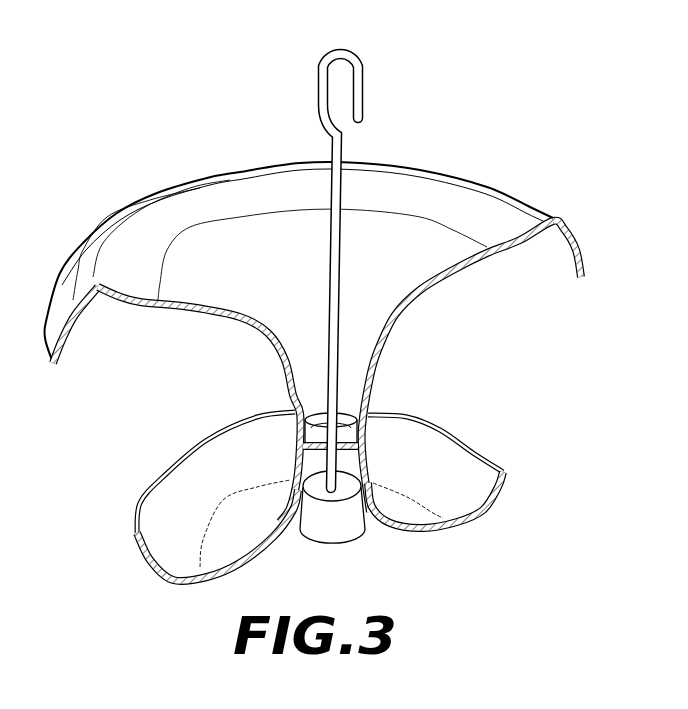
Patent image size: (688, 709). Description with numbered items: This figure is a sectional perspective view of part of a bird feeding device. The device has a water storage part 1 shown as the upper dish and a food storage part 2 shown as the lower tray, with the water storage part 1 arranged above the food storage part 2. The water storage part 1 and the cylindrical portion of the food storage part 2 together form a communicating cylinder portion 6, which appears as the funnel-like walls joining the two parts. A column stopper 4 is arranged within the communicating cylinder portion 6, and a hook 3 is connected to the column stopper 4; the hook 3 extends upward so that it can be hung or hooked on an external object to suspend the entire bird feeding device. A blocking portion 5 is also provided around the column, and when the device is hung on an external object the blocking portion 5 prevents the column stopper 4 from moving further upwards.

The water storage part 1 is at (137, 220).
The food storage part 2 is at (178, 507).
The hook 3 is at (355, 72).
The column stopper 4 is at (350, 527).
The blocking portion 5 is at (343, 423).
The communicating cylinder portion 6 is at (317, 378).